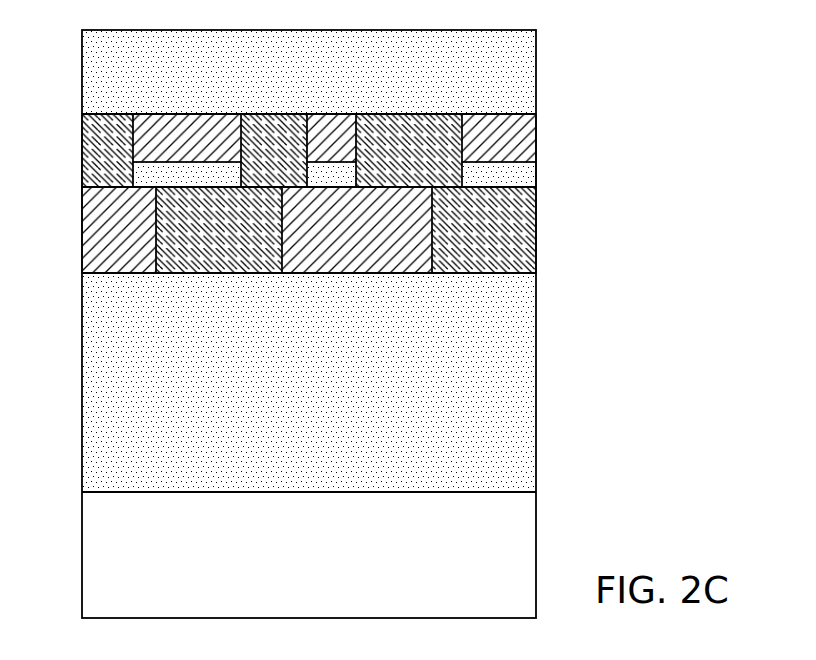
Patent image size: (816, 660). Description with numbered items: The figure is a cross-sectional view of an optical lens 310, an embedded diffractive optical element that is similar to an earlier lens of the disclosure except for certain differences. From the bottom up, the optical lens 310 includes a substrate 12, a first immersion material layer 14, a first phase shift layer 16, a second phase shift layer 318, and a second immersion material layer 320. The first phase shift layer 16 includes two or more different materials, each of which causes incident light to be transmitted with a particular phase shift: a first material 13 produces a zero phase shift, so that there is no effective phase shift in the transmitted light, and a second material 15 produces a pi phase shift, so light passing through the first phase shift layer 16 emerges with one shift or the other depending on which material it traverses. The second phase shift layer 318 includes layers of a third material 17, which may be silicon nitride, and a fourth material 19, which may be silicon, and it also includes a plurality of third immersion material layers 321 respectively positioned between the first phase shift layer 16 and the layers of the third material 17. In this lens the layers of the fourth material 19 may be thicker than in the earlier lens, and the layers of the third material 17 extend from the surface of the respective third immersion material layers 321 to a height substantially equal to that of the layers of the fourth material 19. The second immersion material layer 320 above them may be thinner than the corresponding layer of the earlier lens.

The optical lens 310 is at (652, 54).
The second immersion material layer 320 is at (518, 72).
The second phase shift layer 318 is at (321, 132).
The fourth material 19 is at (93, 138).
The third material 17 is at (182, 135).
The third immersion material layers 321 is at (153, 172).
The first phase shift layer 16 is at (324, 263).
The first material 13 is at (105, 230).
The second material 15 is at (193, 252).
The first immersion material layer 14 is at (483, 382).
The substrate 12 is at (500, 526).